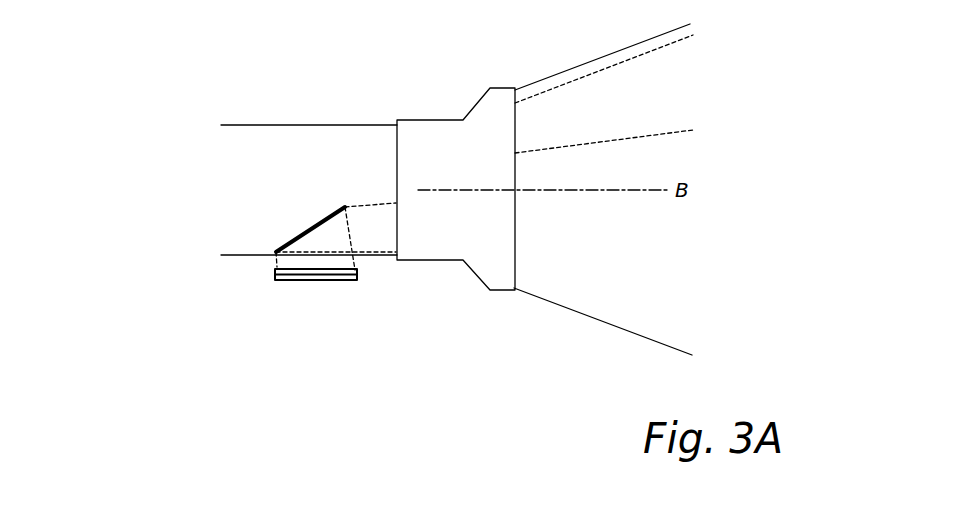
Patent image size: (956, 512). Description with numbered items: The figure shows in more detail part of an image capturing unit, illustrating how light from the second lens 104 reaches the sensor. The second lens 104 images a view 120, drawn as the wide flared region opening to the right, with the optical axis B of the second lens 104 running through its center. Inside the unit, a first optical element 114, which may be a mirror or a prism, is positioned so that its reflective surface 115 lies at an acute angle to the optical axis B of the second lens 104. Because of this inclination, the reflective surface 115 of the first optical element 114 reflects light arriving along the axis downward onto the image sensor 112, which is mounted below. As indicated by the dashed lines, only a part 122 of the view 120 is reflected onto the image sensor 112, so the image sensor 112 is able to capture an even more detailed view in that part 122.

The second lens 104 is at (506, 282).
The image sensor 112 is at (353, 282).
The first optical element 114 is at (293, 242).
The reflective surface 115 is at (333, 215).
The view 120 is at (729, 25).
The part of the view 122 is at (697, 130).